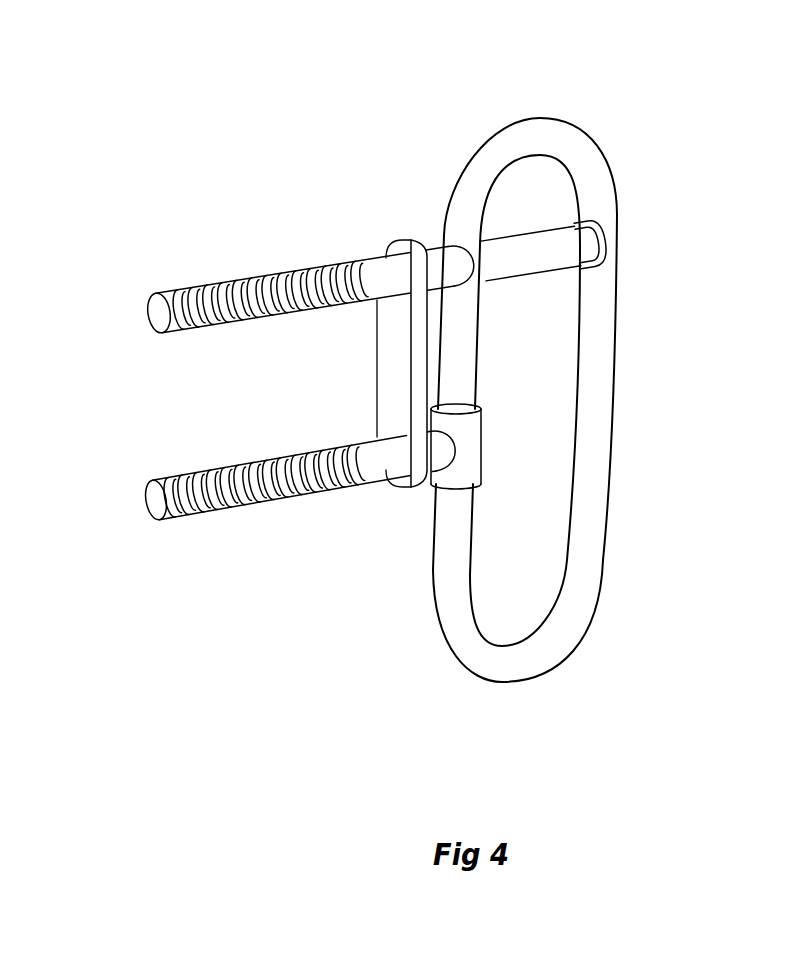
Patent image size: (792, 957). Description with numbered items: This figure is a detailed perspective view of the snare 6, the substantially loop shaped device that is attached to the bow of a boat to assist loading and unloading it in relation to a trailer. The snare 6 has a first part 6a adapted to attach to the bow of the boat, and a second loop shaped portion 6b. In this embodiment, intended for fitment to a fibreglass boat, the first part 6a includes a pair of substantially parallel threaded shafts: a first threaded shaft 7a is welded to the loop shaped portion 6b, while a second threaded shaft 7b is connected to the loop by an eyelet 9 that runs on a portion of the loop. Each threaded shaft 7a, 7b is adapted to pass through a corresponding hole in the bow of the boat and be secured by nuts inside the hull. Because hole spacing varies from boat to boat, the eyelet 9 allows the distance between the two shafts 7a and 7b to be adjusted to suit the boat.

The snare 6 is at (430, 361).
The first part 6a is at (351, 408).
The loop shaped portion 6b is at (618, 345).
The first threaded shaft 7a is at (265, 273).
The second threaded shaft 7b is at (297, 453).
The eyelet 9 is at (478, 448).